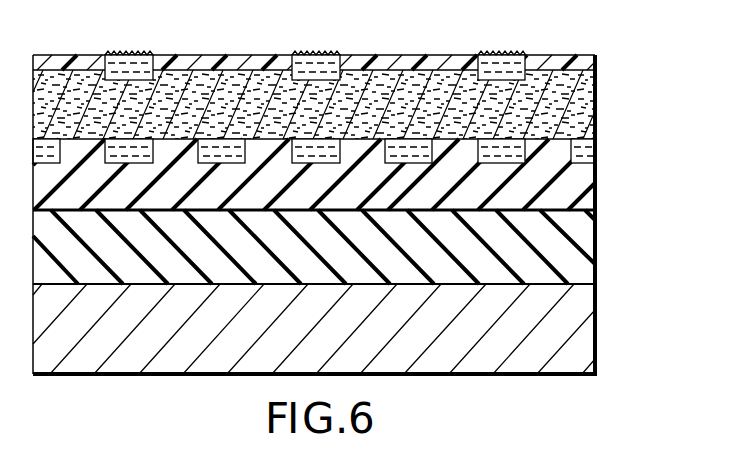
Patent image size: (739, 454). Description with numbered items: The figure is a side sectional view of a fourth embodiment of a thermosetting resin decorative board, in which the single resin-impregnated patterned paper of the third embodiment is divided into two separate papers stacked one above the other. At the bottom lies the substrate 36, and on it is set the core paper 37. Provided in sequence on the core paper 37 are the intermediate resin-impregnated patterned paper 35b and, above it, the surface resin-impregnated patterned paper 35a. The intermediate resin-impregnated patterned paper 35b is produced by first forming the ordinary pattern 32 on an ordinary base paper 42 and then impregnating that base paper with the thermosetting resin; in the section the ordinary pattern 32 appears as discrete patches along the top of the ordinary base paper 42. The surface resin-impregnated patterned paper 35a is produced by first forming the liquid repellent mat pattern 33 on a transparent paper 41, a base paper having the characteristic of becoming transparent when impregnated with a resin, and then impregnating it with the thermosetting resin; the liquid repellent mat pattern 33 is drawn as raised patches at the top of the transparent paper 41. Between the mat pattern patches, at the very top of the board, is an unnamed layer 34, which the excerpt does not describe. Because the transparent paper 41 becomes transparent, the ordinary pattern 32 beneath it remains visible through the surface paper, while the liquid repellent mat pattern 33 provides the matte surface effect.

The liquid repellent mat pattern 33 is at (503, 67).
The upper layer 34 is at (596, 68).
The transparent paper 41 is at (596, 107).
The surface resin-impregnated patterned paper 35a is at (367, 78).
The ordinary pattern 32 is at (594, 146).
The ordinary base paper 42 is at (594, 180).
The intermediate resin-impregnated patterned paper 35b is at (367, 170).
The core paper 37 is at (587, 248).
The substrate 36 is at (586, 330).